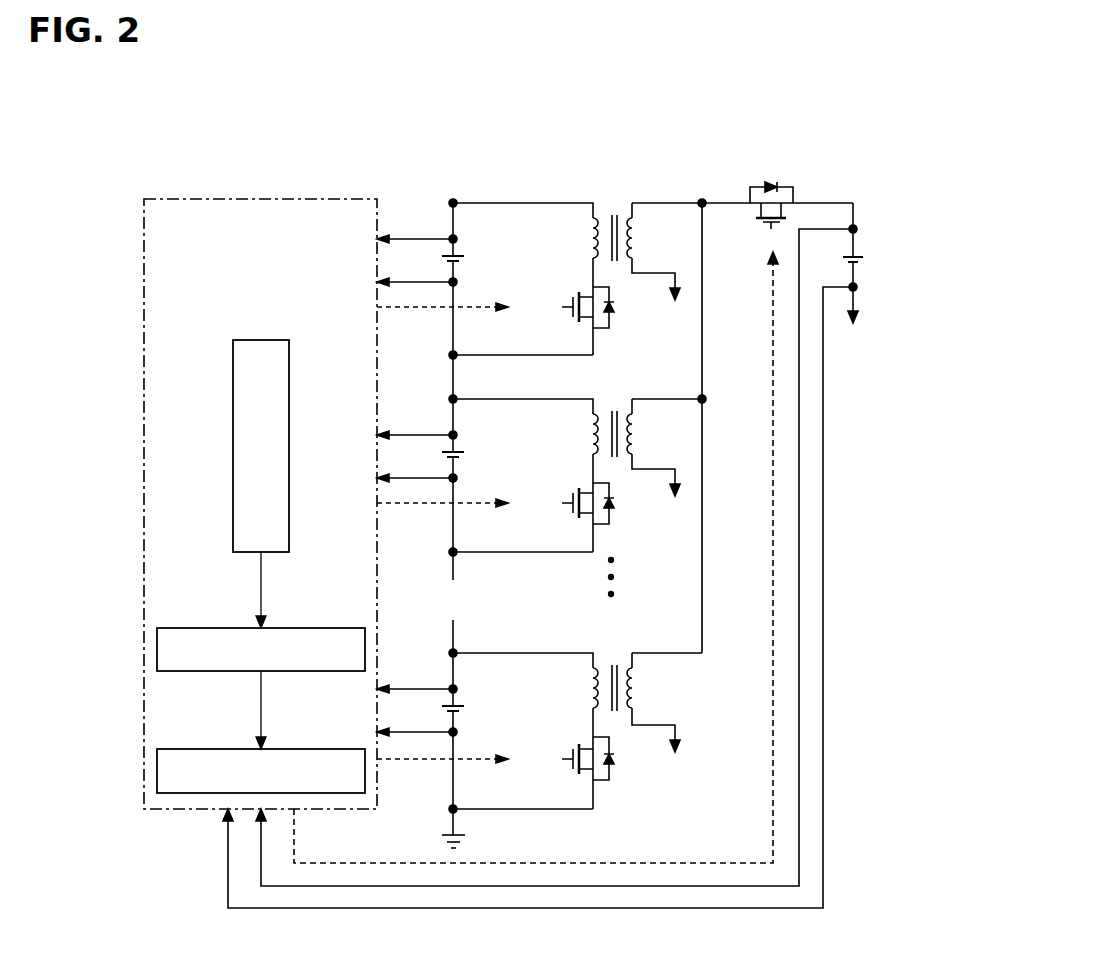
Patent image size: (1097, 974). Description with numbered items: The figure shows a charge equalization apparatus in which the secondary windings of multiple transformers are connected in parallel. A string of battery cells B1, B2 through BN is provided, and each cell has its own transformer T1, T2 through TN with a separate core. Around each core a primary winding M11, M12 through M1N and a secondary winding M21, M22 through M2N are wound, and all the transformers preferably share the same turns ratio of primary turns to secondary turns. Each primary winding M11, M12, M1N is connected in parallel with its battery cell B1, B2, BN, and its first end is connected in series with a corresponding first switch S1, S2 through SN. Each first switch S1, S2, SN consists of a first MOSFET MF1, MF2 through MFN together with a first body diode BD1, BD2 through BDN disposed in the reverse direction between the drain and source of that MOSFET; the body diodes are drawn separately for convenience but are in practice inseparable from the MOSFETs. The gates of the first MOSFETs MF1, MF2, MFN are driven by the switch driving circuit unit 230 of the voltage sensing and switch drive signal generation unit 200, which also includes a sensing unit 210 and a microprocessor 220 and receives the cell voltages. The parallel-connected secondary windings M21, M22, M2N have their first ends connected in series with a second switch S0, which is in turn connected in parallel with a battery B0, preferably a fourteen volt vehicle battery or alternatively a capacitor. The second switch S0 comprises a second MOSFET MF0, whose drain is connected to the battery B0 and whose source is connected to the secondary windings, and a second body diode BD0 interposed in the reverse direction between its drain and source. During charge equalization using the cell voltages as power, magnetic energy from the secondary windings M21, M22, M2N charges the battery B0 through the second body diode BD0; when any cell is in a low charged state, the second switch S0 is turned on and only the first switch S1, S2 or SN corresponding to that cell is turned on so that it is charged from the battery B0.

The voltage sensing and switch drive signal generation unit 200 is at (263, 199).
The sensing unit 210 is at (233, 450).
The microprocessor 220 is at (157, 650).
The switch driving circuit unit 230 is at (157, 772).
The battery cell B1 is at (437, 260).
The battery cell B2 is at (437, 456).
The battery cell BN is at (437, 710).
The battery B0 is at (868, 263).
The transformer T1 is at (610, 211).
The transformer T2 is at (610, 407).
The transformer TN is at (610, 659).
The primary winding M11 is at (571, 238).
The secondary winding M21 is at (664, 251).
The primary winding M12 is at (571, 434).
The secondary winding M22 is at (664, 447).
The primary winding M1N is at (571, 688).
The secondary winding M2N is at (664, 702).
The first switch S1 is at (586, 318).
The first switch S2 is at (586, 514).
The first switch SN is at (586, 769).
The second switch S0 is at (753, 205).
The first MOSFET MF1 is at (554, 319).
The first MOSFET MF2 is at (554, 515).
The first MOSFET MFN is at (553, 771).
The second MOSFET MF0 is at (768, 226).
The first body diode BD1 is at (625, 318).
The first body diode BD2 is at (625, 514).
The first body diode BDN is at (626, 769).
The second body diode BD0 is at (768, 184).